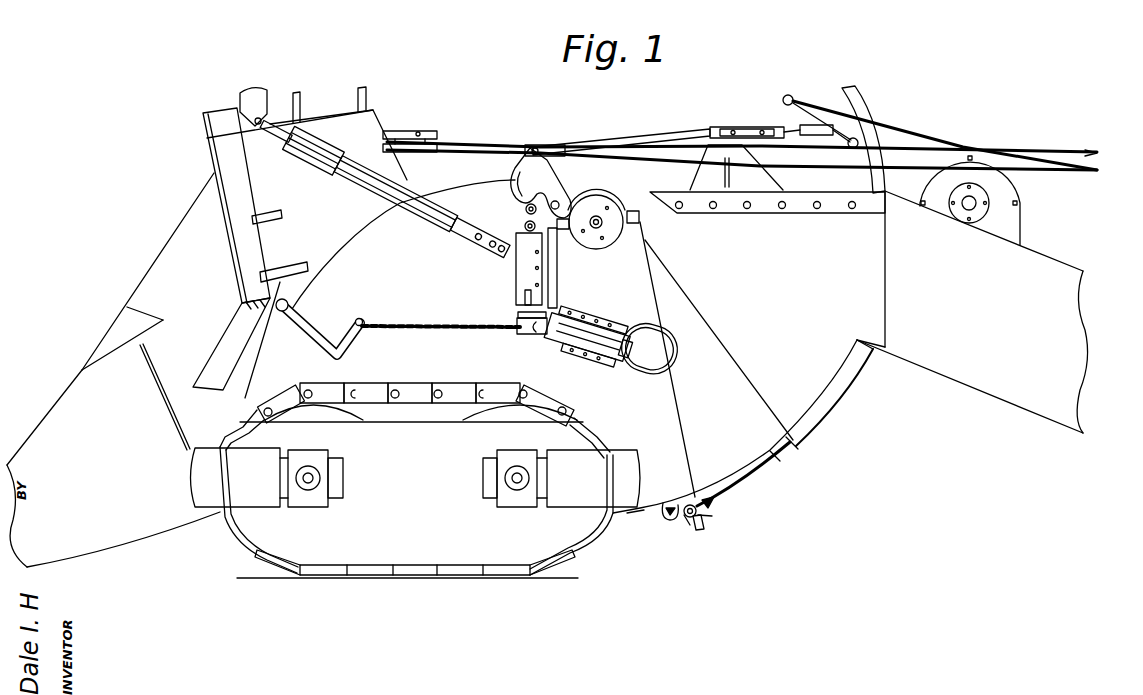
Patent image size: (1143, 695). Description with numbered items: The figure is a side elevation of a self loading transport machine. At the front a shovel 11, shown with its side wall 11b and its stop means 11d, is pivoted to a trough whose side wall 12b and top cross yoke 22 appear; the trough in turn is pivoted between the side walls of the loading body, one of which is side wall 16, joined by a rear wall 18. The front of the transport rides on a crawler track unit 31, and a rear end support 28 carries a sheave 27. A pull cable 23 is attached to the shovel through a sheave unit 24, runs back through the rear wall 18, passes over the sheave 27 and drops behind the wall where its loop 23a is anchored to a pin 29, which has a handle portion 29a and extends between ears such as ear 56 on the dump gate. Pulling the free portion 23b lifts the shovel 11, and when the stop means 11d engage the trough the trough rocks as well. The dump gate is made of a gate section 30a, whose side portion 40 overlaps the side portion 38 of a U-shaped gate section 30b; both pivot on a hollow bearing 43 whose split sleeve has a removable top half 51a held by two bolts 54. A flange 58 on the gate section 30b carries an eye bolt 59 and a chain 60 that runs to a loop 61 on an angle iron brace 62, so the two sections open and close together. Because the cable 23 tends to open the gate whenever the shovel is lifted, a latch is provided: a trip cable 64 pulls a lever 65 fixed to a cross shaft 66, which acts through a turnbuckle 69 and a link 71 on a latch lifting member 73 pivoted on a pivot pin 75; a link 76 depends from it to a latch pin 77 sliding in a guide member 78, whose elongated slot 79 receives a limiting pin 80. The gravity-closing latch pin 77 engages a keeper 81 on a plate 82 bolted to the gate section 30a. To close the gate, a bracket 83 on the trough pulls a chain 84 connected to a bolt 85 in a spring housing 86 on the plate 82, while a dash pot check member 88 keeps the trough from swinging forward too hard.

The shovel 11 is at (70, 406).
The side wall 11b is at (118, 481).
The stop means 11d is at (142, 298).
The side wall 12b is at (348, 231).
The side wall 16 is at (442, 283).
The rear wall 18 is at (858, 96).
The top cross yoke 22 is at (330, 121).
The pull cable 23 is at (500, 140).
The loop 23a is at (713, 506).
The free portion 23b is at (1090, 147).
The sheave unit 24 is at (412, 129).
The sheave 27 is at (1020, 195).
The rear end support 28 is at (1085, 323).
The pin 29 is at (705, 518).
The handle portion 29a is at (686, 523).
The gate section 30a is at (648, 518).
The gate section 30b is at (776, 402).
The crawler track unit 31 is at (378, 560).
The side portion 38 is at (717, 416).
The side portion 40 is at (665, 437).
The hollow bearing 43 is at (611, 225).
The top half 51a is at (614, 180).
The bolts 54 is at (563, 229).
The ear 56 is at (700, 530).
The flange 58 is at (798, 447).
The eye bolt 59 is at (768, 446).
The chain 60 is at (745, 480).
The loop 61 is at (668, 503).
The angle iron brace 62 is at (687, 504).
The trip cable 64 is at (1100, 174).
The lever 65 is at (783, 100).
The cross shaft 66 is at (852, 148).
The turnbuckle 69 is at (722, 118).
The link 71 is at (652, 102).
The latch lifting member 73 is at (550, 180).
The pivot pin 75 is at (514, 180).
The link 76 is at (525, 210).
The latch pin 77 is at (524, 227).
The guide member 78 is at (516, 267).
The elongated slot 79 is at (548, 292).
The pin 80 is at (525, 298).
The keeper 81 is at (518, 315).
The plate 82 is at (520, 333).
The bracket 83 is at (347, 314).
The chain 84 is at (410, 332).
The bolt 85 is at (537, 337).
The spring housing 86 is at (600, 372).
The dash pot check member 88 is at (340, 176).